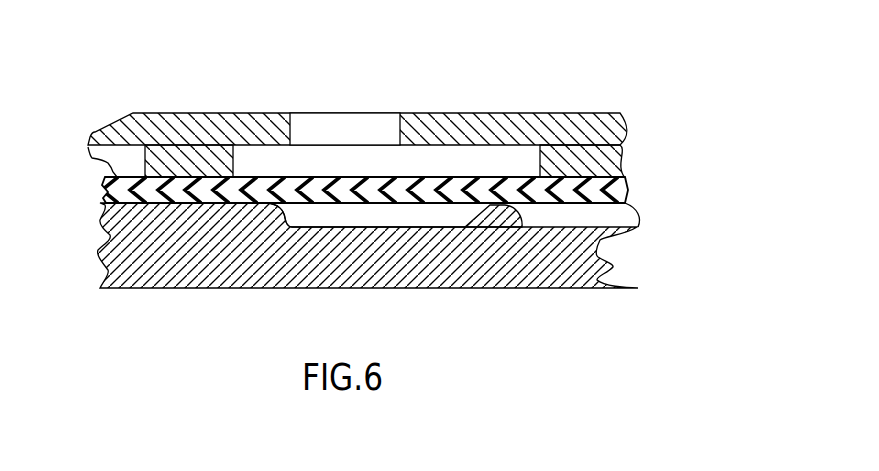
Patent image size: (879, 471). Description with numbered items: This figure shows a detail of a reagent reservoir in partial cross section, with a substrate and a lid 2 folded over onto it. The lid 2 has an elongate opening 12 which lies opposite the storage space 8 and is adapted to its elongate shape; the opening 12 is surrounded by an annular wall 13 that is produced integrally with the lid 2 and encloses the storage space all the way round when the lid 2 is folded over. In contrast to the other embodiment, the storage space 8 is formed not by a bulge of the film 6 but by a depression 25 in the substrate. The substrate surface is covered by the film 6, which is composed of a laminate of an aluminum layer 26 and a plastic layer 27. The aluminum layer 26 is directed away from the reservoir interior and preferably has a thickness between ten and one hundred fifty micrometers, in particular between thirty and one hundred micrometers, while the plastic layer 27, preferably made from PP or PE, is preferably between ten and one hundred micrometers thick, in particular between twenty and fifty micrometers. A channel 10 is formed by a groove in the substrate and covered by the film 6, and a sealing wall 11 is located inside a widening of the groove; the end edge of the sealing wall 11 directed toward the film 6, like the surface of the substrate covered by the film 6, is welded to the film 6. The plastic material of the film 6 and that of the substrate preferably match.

The lid 2 is at (593, 113).
The film 6 is at (411, 124).
The storage space 8 is at (393, 214).
The channel 10 is at (562, 217).
The sealing wall 11 is at (502, 222).
The opening 12 is at (347, 113).
The annular wall 13 is at (180, 163).
The depression 25 is at (300, 223).
The aluminum layer 26 is at (622, 187).
The plastic layer 27 is at (617, 200).